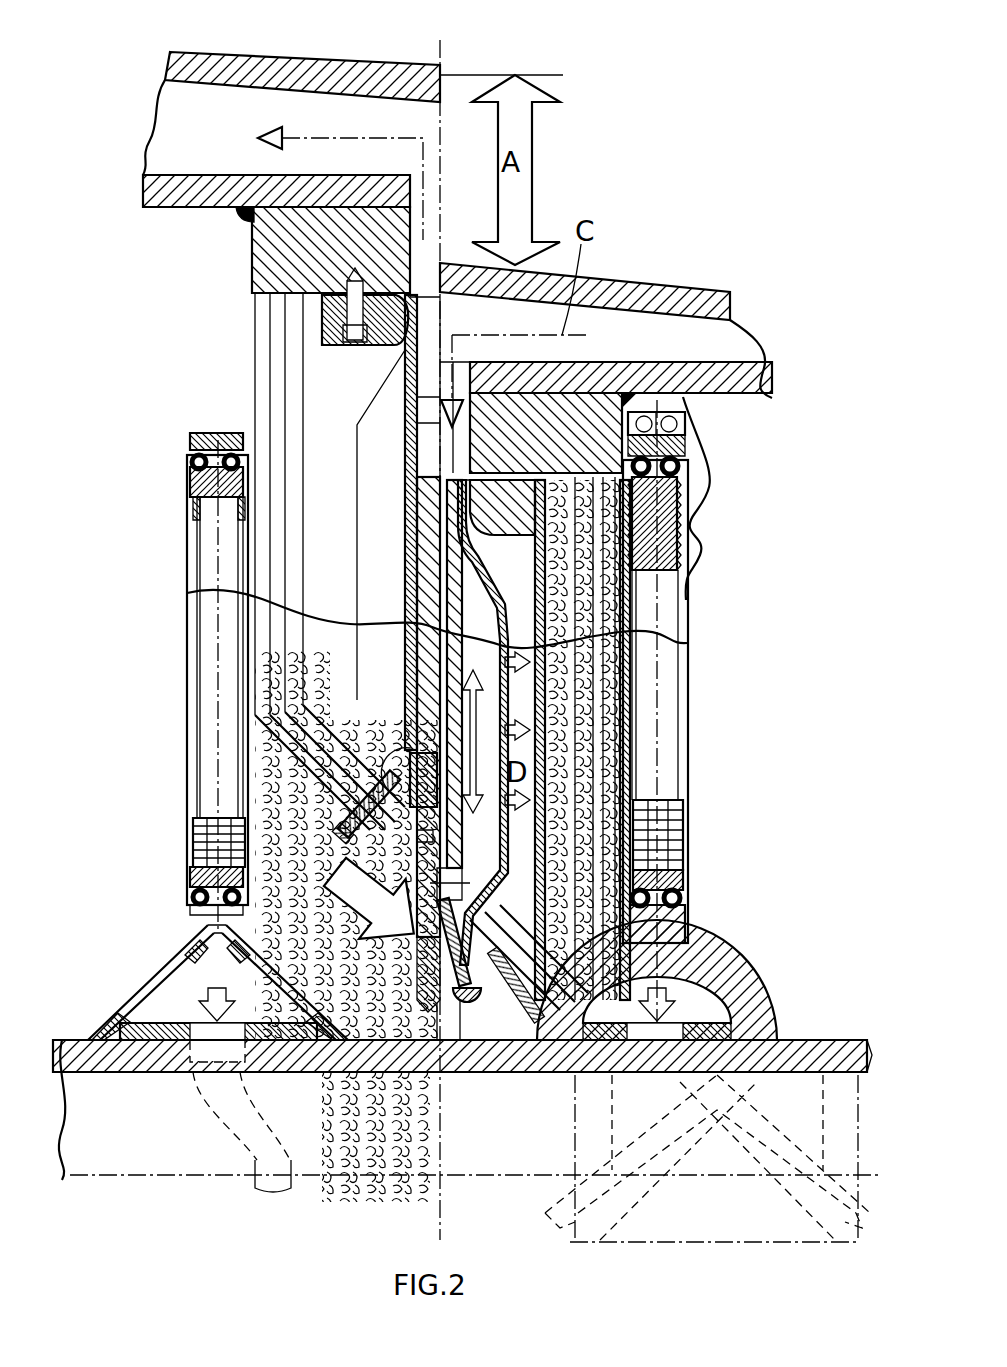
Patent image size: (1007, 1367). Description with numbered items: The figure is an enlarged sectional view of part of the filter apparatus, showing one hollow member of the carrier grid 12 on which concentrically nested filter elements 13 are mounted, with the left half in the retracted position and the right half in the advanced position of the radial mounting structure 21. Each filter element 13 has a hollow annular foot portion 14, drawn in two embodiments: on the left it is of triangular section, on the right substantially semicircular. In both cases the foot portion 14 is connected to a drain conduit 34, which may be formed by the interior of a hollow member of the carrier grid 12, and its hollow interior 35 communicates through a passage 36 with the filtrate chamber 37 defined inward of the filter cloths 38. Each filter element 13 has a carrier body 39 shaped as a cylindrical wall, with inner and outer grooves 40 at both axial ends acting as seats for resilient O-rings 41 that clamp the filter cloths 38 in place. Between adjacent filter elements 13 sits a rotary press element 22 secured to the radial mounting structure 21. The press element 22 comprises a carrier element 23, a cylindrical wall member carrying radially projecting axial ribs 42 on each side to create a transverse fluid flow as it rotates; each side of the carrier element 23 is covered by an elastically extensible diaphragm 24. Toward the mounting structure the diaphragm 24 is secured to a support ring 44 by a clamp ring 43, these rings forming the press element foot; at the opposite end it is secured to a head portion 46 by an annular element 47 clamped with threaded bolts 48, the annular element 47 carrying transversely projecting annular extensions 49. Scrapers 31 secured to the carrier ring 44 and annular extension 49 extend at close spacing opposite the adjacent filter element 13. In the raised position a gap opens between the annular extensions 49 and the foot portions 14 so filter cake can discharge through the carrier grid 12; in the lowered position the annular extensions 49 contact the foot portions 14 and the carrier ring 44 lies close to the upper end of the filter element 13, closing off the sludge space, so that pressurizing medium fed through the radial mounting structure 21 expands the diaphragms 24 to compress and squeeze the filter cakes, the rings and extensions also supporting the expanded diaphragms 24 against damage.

The carrier grid 12 is at (83, 1123).
The filter element 13 is at (184, 705).
The foot portion 14 is at (133, 990).
The radial mounting structure 21 is at (318, 57).
The rotary press element 22 is at (362, 400).
The carrier element 23 is at (258, 405).
The diaphragm 24 is at (410, 572).
The scraper 31 is at (408, 487).
The drain conduit 34 is at (237, 1110).
The hollow interior 35 is at (170, 997).
The passage 36 is at (193, 870).
The filtrate chamber 37 is at (197, 823).
The filter cloths 38 is at (190, 560).
The carrier body 39 is at (190, 485).
The grooves 40 is at (200, 440).
The O-rings 41 is at (197, 460).
The ribs 42 is at (387, 527).
The clamp ring 43 is at (327, 320).
The support ring 44 is at (273, 247).
The head portion 46 is at (448, 1005).
The annular element 47 is at (470, 1000).
The threaded bolts 48 is at (390, 750).
The annular extensions 49 is at (403, 790).